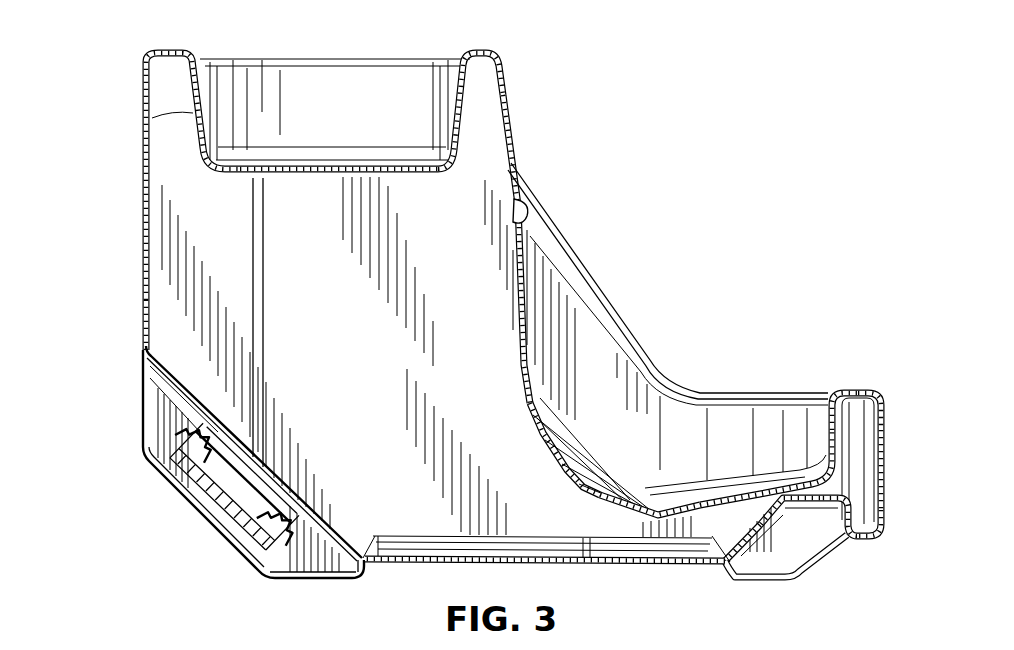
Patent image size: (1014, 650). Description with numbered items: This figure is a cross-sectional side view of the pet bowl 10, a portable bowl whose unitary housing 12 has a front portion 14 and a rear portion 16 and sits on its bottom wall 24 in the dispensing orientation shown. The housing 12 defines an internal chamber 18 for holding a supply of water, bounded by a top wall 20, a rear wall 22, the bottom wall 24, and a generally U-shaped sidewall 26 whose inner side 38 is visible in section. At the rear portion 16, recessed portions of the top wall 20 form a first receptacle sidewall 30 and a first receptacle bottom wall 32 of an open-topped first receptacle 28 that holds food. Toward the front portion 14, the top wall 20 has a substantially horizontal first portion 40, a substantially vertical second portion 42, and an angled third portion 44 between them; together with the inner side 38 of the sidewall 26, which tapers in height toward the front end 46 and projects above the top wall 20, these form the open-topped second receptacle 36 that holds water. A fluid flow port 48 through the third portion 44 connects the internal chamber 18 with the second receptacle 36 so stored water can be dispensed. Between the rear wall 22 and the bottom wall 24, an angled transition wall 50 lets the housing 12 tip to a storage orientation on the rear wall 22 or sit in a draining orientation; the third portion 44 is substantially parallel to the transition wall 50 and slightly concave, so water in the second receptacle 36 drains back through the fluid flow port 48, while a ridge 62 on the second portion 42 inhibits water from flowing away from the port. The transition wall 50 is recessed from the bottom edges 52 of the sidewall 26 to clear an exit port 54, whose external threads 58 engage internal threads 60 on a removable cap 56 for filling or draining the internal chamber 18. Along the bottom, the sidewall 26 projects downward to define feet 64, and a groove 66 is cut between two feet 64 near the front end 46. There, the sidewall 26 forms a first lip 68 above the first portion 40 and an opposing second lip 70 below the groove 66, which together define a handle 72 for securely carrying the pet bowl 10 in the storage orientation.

The pet bowl 10 is at (510, 310).
The housing 12 is at (137, 298).
The front portion 14 is at (880, 390).
The rear portion 16 is at (141, 44).
The internal chamber 18 is at (337, 356).
The top wall 20 is at (484, 52).
The rear wall 22 is at (143, 230).
The bottom wall 24 is at (650, 567).
The sidewall 26 is at (605, 298).
The first receptacle 28 is at (352, 80).
The first receptacle sidewall 30 is at (200, 110).
The first receptacle bottom wall 32 is at (333, 166).
The second receptacle 36 is at (686, 410).
The inner side 38 is at (610, 400).
The first portion 40 is at (763, 483).
The second portion 42 is at (520, 288).
The third portion 44 is at (633, 493).
The front end 46 is at (884, 448).
The fluid flow port 48 is at (543, 433).
The transition wall 50 is at (183, 392).
The bottom edges 52 is at (235, 545).
The exit port 54 is at (213, 471).
The cap 56 is at (210, 512).
The external threads 58 is at (187, 450).
The internal threads 60 is at (278, 542).
The ridge 62 is at (527, 208).
The feet 64 is at (303, 580).
The groove 66 is at (813, 560).
The first lip 68 is at (845, 392).
The second lip 70 is at (860, 538).
The handle 72 is at (888, 541).